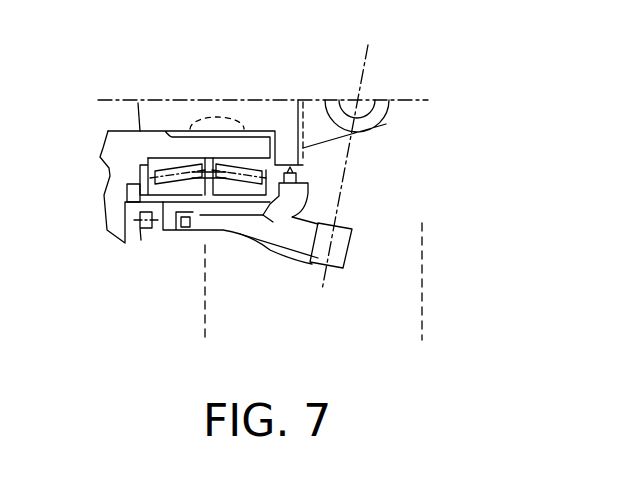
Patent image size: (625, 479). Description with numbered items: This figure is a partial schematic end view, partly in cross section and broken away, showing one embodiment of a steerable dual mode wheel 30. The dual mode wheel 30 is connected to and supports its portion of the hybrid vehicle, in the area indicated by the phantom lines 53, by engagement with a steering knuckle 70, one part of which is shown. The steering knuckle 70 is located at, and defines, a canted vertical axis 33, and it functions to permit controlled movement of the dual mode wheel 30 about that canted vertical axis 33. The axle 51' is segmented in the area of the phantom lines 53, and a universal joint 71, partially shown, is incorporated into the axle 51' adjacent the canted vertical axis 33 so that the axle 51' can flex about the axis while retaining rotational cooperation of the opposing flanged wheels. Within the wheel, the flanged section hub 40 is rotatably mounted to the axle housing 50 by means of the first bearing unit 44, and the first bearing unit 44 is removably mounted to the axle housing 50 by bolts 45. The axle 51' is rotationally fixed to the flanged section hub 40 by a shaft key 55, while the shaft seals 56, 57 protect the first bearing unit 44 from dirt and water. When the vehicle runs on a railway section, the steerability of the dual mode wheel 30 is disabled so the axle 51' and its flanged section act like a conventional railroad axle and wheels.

The dual mode wheel 30 is at (170, 278).
The canted vertical axis 33 is at (367, 72).
The flanged section hub 40 is at (100, 157).
The first bearing unit 44 is at (224, 232).
The bolts 45 is at (143, 232).
The axle housing 50 is at (263, 217).
The axle 51' is at (100, 116).
The phantom lines 53 is at (422, 320).
The shaft key 55 is at (222, 117).
The shaft seal 56 is at (308, 190).
The shaft seal 57 is at (127, 192).
The steering knuckle 70 is at (343, 270).
The universal joint 71 is at (373, 128).